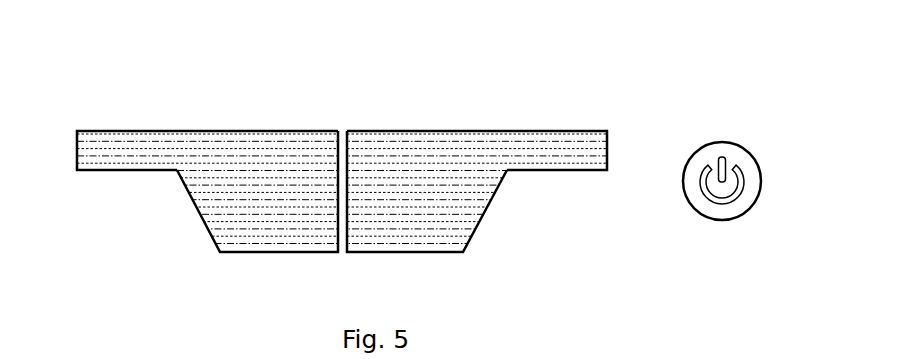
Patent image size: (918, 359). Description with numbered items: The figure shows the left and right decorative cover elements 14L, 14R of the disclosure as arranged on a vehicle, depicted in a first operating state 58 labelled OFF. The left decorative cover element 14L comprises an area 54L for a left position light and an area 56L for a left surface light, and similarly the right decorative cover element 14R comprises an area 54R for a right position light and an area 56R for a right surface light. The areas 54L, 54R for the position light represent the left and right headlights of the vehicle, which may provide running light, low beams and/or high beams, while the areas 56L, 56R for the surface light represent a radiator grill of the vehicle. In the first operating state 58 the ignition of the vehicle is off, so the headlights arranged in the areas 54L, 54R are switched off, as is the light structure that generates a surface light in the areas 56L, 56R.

The right decorative cover element 14R is at (323, 175).
The left decorative cover element 14L is at (347, 175).
The area for right position light 54R is at (95, 131).
The area for left position light 54L is at (566, 131).
The area for right surface light 56R is at (271, 253).
The area for left surface light 56L is at (405, 253).
The first operating state 58 is at (764, 162).